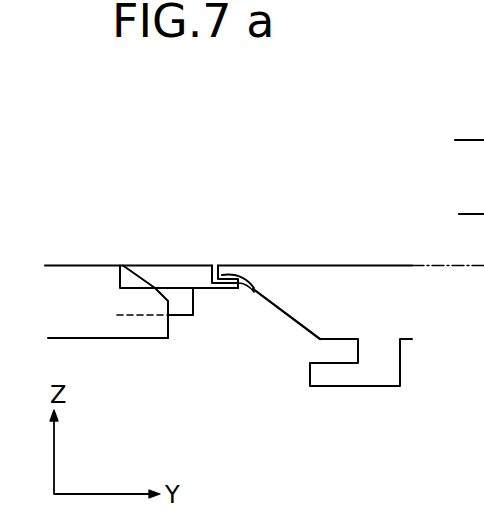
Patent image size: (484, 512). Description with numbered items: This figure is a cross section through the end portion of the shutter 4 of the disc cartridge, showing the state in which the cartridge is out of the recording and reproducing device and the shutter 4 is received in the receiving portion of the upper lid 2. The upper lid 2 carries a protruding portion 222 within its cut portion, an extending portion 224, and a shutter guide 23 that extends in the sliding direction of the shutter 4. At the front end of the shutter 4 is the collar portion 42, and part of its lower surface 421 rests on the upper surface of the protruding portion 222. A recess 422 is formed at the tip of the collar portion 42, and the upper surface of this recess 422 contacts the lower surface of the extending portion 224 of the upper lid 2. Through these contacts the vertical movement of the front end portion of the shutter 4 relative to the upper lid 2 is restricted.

The upper lid 2 is at (65, 265).
The protruding portion 222 is at (137, 288).
The collar portion 42 is at (195, 277).
The lower surface 421 is at (208, 290).
The extending portion 224 is at (224, 272).
The recess 422 is at (260, 295).
The shutter 4 is at (182, 317).
The shutter guide 23 is at (357, 380).